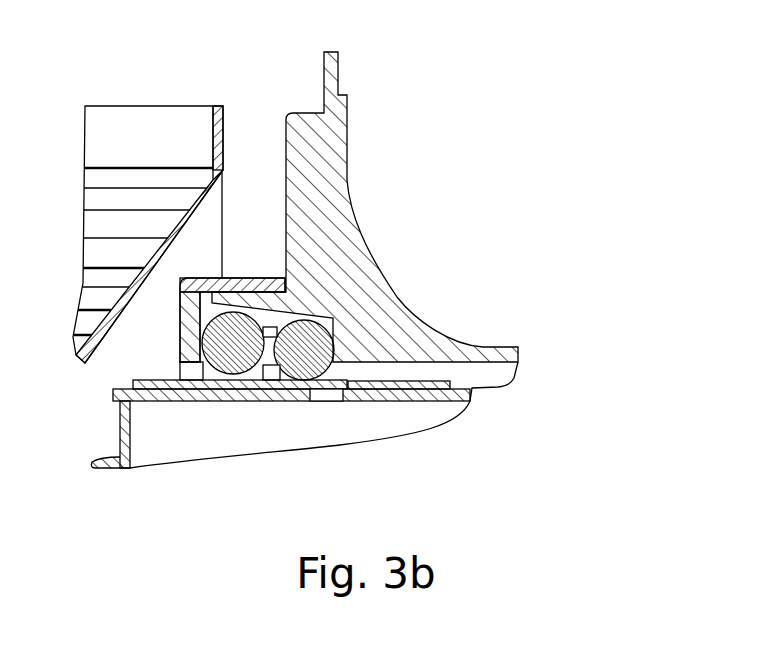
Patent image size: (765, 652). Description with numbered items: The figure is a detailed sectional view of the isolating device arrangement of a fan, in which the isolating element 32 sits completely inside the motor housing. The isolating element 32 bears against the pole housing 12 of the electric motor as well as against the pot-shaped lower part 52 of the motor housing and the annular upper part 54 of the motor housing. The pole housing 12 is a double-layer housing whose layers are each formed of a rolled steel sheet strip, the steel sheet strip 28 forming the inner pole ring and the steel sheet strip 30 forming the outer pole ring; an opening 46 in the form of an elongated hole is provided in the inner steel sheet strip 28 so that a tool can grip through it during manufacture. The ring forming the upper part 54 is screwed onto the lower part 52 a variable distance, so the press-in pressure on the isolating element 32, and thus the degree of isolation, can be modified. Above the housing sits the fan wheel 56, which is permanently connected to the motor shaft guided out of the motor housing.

The pole housing 12 is at (177, 406).
The steel sheet strip 28 is at (387, 402).
The steel sheet strip 30 is at (403, 382).
The isolating element 32 is at (238, 352).
The opening 46 is at (328, 402).
The lower part of the motor housing 52 is at (332, 157).
The upper part of the motor housing 54 is at (244, 279).
The fan wheel 56 is at (153, 127).